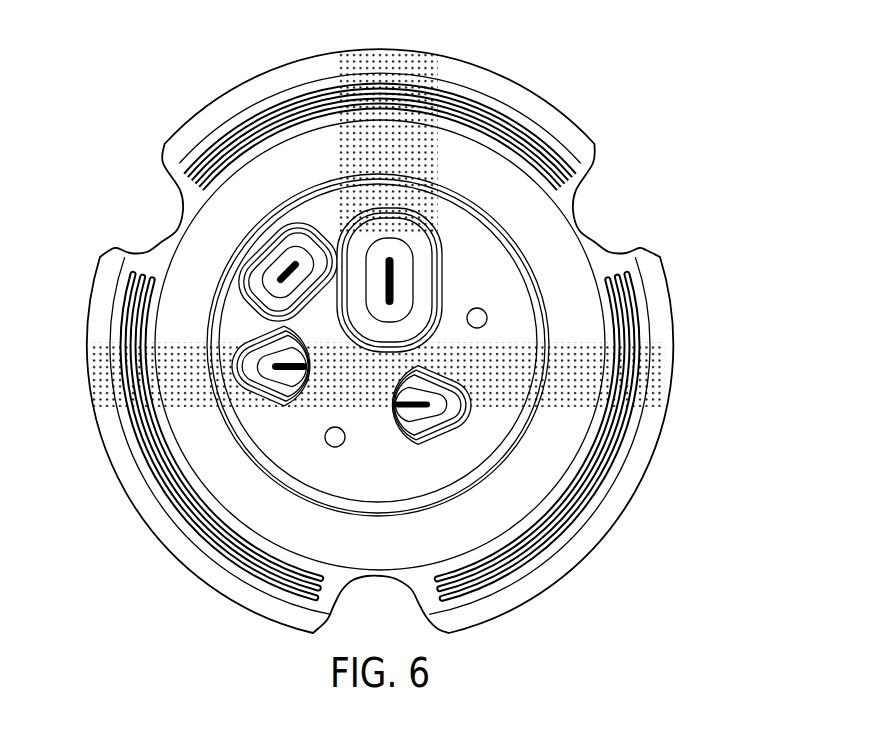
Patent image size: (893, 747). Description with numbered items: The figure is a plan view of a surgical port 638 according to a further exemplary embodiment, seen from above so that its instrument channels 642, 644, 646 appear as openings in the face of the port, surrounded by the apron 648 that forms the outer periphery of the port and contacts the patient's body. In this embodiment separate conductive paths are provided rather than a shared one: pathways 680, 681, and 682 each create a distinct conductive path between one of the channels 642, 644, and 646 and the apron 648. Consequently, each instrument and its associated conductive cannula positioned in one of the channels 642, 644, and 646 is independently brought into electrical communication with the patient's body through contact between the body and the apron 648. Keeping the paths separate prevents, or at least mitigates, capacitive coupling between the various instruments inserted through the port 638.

The surgical port 638 is at (396, 323).
The channel 642 is at (282, 363).
The channel 644 is at (418, 408).
The channel 646 is at (393, 283).
The apron 648 is at (187, 567).
The pathway 680 is at (394, 58).
The pathway 681 is at (97, 383).
The pathway 682 is at (659, 378).